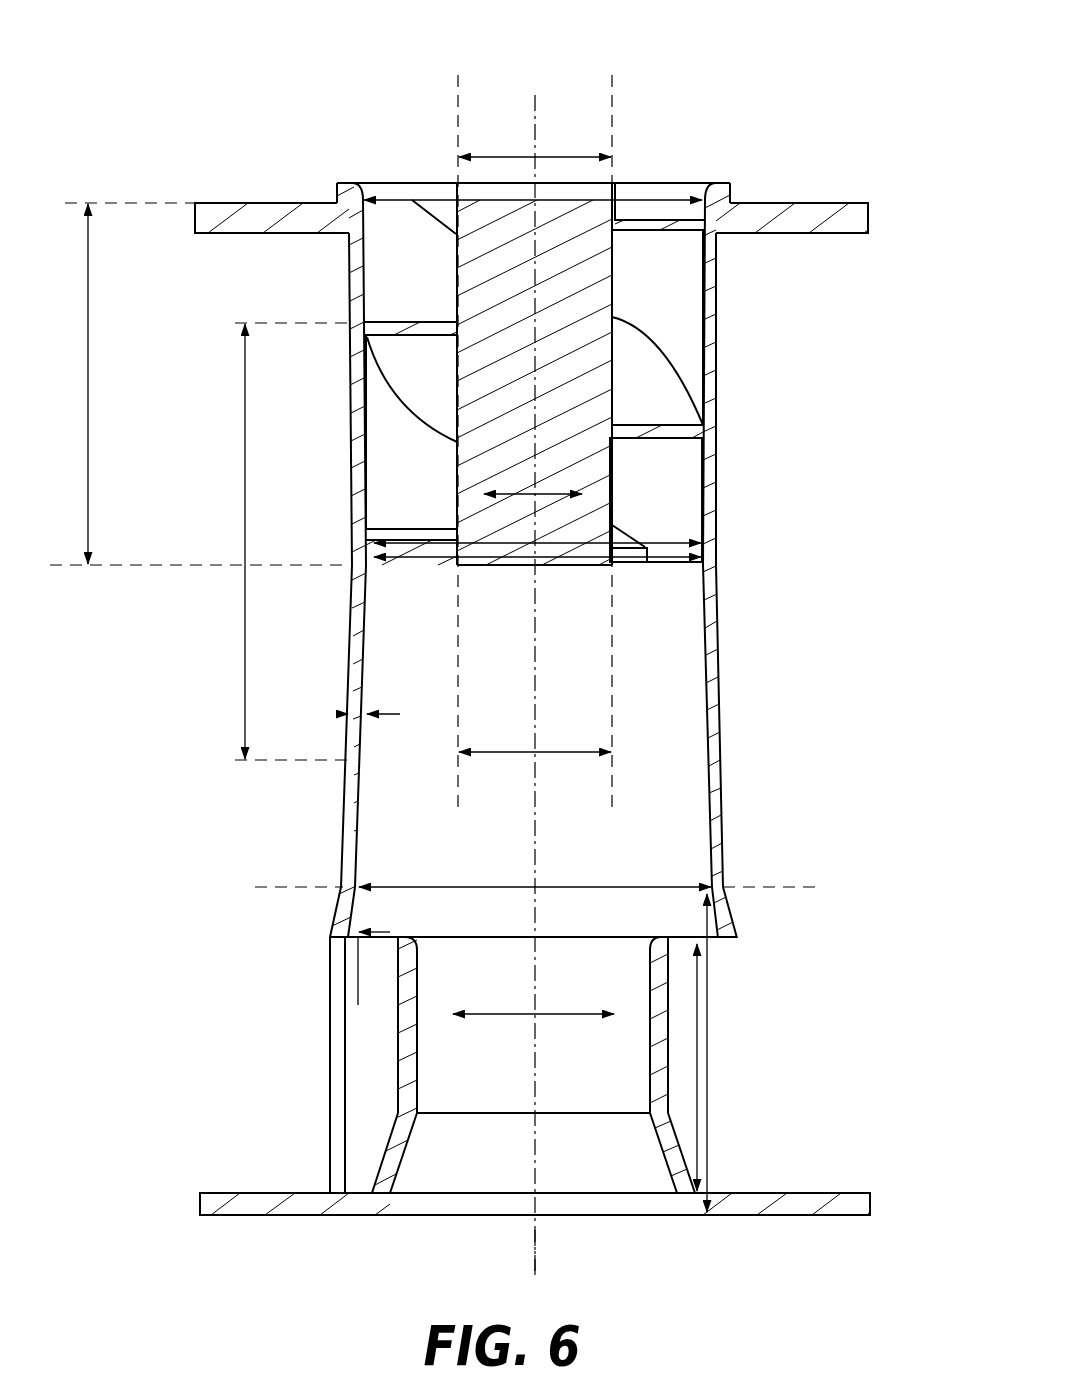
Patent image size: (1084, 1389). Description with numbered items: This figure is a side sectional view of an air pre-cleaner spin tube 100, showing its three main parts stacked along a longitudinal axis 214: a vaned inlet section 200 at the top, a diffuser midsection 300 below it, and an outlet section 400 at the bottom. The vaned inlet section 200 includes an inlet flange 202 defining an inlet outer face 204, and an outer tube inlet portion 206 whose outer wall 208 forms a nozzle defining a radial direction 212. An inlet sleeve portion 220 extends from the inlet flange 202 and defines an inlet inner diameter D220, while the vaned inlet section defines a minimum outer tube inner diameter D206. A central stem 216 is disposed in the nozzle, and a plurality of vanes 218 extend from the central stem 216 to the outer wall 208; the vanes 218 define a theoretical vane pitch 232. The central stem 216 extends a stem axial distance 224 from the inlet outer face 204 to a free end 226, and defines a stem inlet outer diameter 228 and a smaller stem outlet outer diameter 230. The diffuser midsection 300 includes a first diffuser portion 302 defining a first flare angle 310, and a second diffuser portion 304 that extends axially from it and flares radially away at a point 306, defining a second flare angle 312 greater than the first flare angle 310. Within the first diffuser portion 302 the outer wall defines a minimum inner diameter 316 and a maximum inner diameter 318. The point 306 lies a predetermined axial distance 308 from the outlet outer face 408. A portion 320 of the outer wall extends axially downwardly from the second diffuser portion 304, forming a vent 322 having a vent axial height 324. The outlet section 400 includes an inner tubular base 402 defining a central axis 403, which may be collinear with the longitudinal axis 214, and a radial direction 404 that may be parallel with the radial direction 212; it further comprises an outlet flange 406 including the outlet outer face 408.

The air pre-cleaner spin tube 100 is at (816, 70).
The vaned inlet section 200 is at (723, 313).
The inlet flange 202 is at (866, 200).
The inlet outer face 204 is at (245, 202).
The outer tube inlet portion 206 is at (350, 373).
The outer wall 208 is at (710, 460).
The radial direction 212 is at (560, 497).
The longitudinal axis 214 is at (540, 108).
The central stem 216 is at (594, 470).
The vanes 218 is at (672, 226).
The inlet sleeve portion 220 is at (345, 181).
The stem axial distance 224 is at (92, 426).
The free end 226 is at (500, 567).
The stem inlet outer diameter 228 is at (470, 152).
The stem outlet outer diameter 230 is at (545, 760).
The vane pitch 232 is at (243, 677).
The inlet inner diameter D220 is at (393, 199).
The minimum outer tube inner diameter D206 is at (660, 542).
The diffuser midsection 300 is at (738, 578).
The first diffuser portion 302 is at (712, 705).
The second diffuser portion 304 is at (725, 918).
The point 306 is at (733, 880).
The predetermined axial distance 308 is at (707, 1140).
The first flare angle 310 is at (336, 713).
The second flare angle 312 is at (331, 932).
The minimum inner diameter 316 is at (665, 558).
The maximum inner diameter 318 is at (620, 887).
The portion of the outer wall 320 is at (328, 1193).
The vent 322 is at (720, 1043).
The vent axial height 324 is at (698, 1090).
The outlet section 400 is at (313, 1105).
The inner tubular base 402 is at (396, 1047).
The central axis 403 is at (540, 1245).
The radial direction 404 is at (570, 1015).
The outlet flange 406 is at (248, 1190).
The outlet outer face 408 is at (803, 1217).